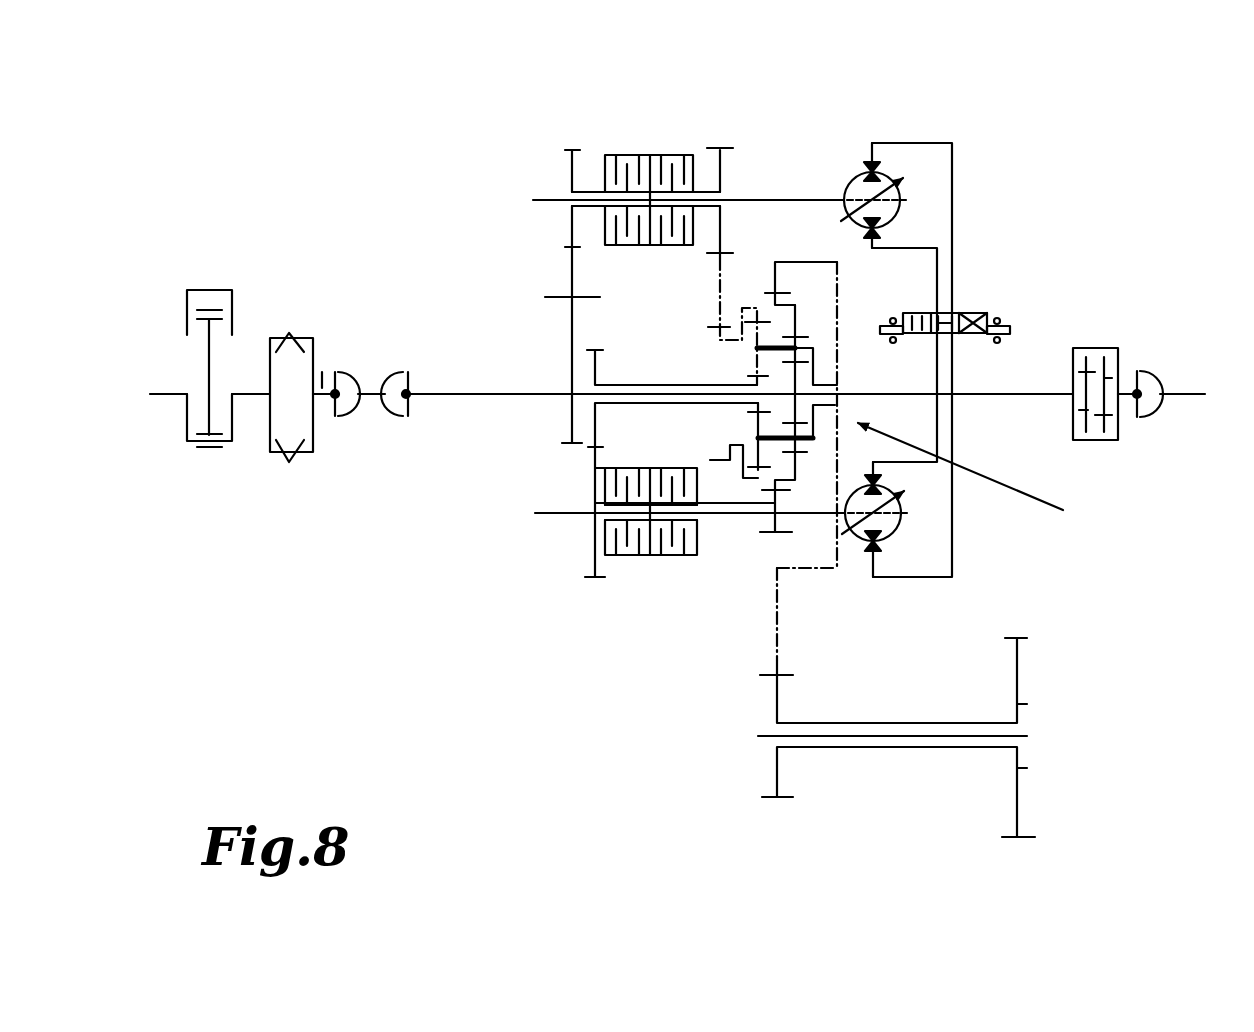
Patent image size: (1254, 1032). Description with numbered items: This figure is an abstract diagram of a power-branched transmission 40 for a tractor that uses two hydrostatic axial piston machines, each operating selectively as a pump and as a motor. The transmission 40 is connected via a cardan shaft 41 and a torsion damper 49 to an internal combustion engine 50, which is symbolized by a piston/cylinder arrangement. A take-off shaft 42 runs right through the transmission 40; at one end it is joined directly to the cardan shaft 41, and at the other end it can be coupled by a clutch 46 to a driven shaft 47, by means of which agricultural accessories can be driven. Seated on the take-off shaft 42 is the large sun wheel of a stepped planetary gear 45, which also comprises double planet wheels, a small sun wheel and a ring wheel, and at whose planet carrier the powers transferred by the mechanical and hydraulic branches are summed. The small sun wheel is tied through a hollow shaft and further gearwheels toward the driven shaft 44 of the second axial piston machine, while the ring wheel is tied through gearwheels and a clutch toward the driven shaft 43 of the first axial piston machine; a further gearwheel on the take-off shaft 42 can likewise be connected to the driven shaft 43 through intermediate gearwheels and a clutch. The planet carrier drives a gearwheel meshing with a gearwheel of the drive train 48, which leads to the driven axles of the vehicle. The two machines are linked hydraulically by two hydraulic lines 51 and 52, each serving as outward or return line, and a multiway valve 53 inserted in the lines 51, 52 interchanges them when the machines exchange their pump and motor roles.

The power-branched transmission 40 is at (377, 575).
The cardan shaft 41 is at (368, 392).
The take-off shaft 42 is at (492, 393).
The driven shaft of the first hydrostatic axial piston machine 43 is at (548, 198).
The driven shaft of the second hydrostatic axial piston machine 44 is at (553, 514).
The stepped planetary gear 45 is at (989, 487).
The clutch 46 is at (1097, 360).
The driven shaft 47 is at (1182, 396).
The drive train 48 is at (887, 733).
The torsion damper 49 is at (290, 367).
The internal combustion engine 50 is at (165, 267).
The hydraulic line 51 is at (922, 143).
The hydraulic line 52 is at (937, 277).
The multiway valve 53 is at (1000, 293).